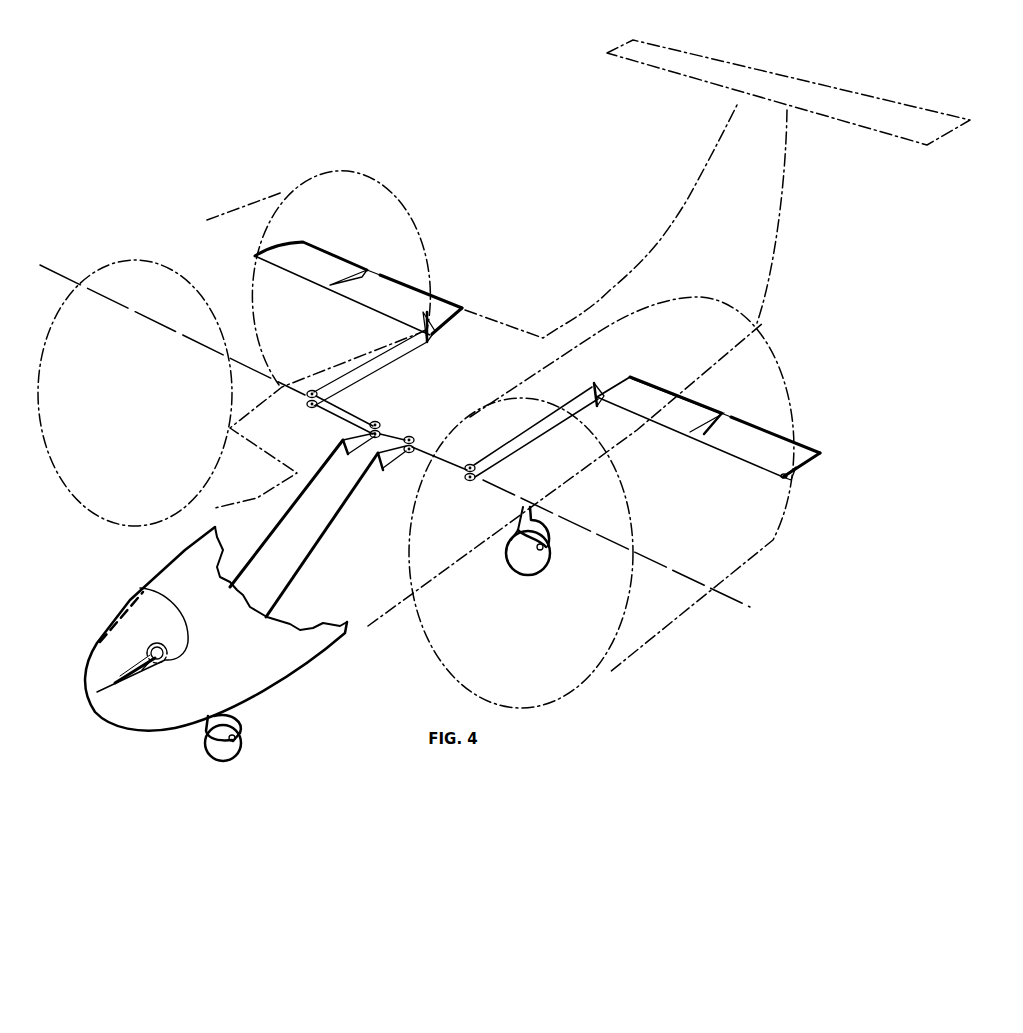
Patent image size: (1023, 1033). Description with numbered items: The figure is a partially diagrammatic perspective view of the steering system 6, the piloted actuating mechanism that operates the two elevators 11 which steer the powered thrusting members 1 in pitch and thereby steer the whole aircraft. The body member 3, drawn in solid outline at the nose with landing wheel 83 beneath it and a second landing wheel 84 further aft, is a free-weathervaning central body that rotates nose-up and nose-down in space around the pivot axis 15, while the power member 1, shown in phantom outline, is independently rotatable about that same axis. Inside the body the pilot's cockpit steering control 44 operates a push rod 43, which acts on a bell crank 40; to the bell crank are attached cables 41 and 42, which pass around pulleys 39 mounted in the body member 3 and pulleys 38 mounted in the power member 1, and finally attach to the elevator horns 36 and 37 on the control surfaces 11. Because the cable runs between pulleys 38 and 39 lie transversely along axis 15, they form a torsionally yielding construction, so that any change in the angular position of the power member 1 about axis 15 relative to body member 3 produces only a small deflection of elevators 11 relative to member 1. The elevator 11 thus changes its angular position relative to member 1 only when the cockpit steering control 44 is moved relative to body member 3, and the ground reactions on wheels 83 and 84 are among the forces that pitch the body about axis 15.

The powered thrusting member 1 is at (207, 220).
The body member 3 is at (281, 682).
The steering system 6 is at (350, 413).
The elevator 11 is at (303, 257).
The pivot axis 15 is at (716, 594).
The elevator horn 36 is at (666, 380).
The elevator horn 37 is at (608, 410).
The pulley 38 is at (468, 481).
The pulley 39 is at (411, 437).
The bell crank 40 is at (380, 468).
The cable 41 is at (559, 409).
The cable 42 is at (558, 428).
The push rod 43 is at (316, 534).
The cockpit steering control 44 is at (148, 656).
The landing wheel 83 is at (243, 746).
The landing wheel 84 is at (529, 577).